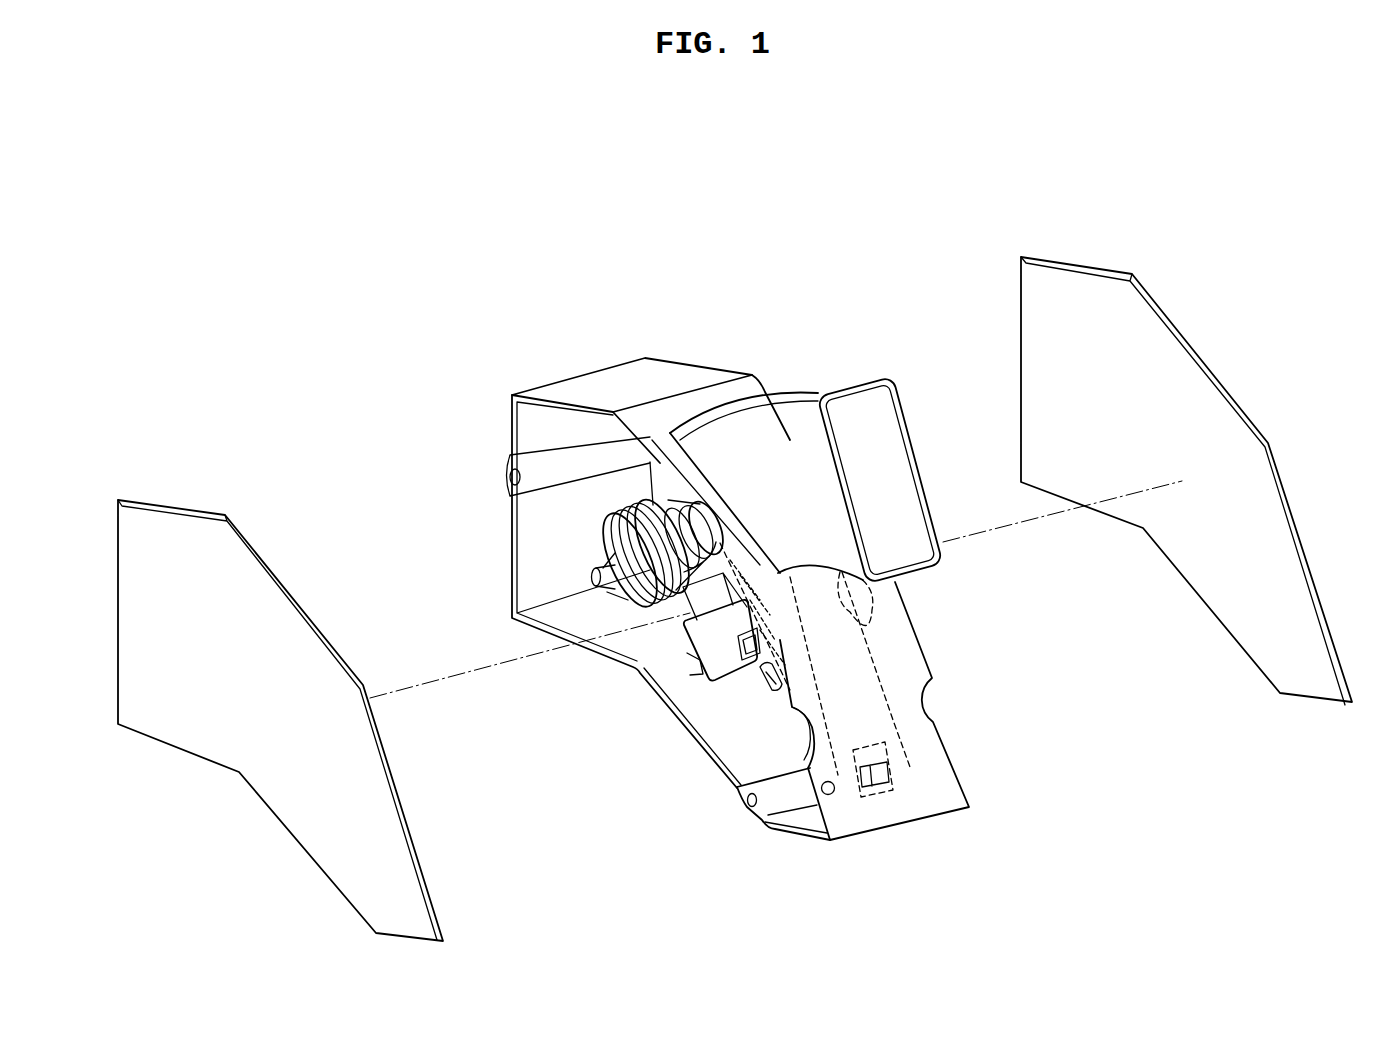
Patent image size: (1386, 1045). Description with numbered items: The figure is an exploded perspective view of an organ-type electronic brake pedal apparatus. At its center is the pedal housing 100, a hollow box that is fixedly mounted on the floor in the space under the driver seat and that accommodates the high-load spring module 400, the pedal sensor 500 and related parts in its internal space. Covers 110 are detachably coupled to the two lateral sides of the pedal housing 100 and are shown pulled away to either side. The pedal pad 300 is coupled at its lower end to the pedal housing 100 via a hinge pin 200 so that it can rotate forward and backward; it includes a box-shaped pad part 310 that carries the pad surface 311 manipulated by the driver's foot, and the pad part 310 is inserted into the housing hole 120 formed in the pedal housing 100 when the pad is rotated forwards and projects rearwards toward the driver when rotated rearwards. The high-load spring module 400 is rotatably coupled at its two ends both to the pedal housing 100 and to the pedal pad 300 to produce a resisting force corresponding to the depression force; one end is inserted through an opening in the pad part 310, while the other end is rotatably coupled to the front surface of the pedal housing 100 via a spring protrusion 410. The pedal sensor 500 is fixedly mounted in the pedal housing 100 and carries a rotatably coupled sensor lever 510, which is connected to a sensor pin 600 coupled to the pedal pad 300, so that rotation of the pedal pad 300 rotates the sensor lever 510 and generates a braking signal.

The pedal housing 100 is at (607, 382).
The covers 110 is at (160, 528).
The housing hole 120 is at (720, 487).
The hinge pin 200 is at (870, 782).
The pedal pad 300 is at (806, 562).
The pad part 310 is at (780, 420).
The pad surface 311 is at (870, 407).
The high-load spring module 400 is at (633, 538).
The spring protrusion 410 is at (593, 583).
The pedal sensor 500 is at (717, 652).
The sensor lever 510 is at (760, 680).
The sensor pin 600 is at (707, 767).